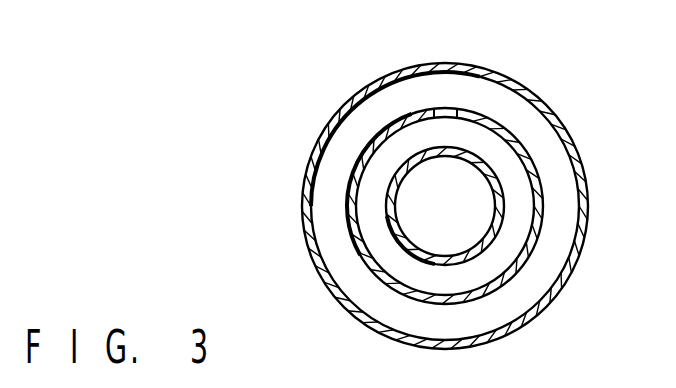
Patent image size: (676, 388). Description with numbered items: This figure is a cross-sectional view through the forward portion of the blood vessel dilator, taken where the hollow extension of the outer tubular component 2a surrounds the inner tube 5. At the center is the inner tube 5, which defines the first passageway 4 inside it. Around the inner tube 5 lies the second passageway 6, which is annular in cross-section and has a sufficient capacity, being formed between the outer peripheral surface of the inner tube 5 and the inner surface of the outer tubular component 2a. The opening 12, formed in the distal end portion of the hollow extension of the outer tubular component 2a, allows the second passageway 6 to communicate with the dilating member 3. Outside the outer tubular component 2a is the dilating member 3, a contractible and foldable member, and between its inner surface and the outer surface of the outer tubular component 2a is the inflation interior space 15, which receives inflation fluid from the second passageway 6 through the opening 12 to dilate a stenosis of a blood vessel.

The dilating member 3 is at (313, 177).
The inflation interior space 15 is at (510, 298).
The outer tubular component 2a is at (540, 202).
The opening 12 is at (445, 112).
The second passageway 6 is at (373, 220).
The inner tube 5 is at (487, 168).
The first passageway 4 is at (430, 178).